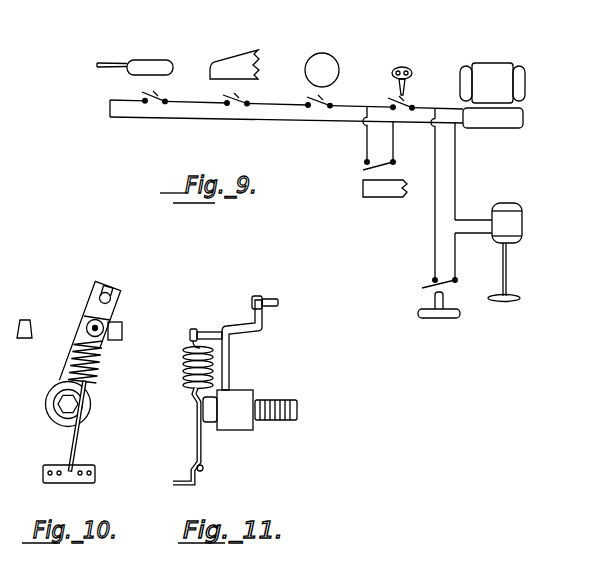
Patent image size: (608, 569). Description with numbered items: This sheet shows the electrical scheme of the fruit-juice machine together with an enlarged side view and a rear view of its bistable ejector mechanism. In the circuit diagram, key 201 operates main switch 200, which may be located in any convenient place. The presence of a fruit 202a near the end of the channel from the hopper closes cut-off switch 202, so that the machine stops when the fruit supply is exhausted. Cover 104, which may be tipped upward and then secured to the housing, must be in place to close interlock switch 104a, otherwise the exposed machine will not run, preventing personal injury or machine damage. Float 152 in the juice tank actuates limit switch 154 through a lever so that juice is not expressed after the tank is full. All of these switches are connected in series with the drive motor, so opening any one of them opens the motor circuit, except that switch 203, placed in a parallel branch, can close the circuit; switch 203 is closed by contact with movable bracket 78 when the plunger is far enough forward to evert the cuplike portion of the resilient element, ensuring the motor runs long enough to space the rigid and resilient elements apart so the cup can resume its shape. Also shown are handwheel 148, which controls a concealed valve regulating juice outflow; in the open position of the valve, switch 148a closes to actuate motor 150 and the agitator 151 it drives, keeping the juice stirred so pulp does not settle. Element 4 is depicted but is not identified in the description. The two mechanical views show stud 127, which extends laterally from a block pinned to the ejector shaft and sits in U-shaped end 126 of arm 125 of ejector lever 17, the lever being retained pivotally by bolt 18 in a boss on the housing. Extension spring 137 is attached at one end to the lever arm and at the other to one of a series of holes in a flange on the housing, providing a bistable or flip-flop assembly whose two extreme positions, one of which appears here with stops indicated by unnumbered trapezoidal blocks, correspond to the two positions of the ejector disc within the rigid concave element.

In FIG. 9, the float 152 is at (147, 59).
In FIG. 9, the cover 104 is at (237, 59).
In FIG. 9, the fruit 202a is at (322, 53).
In FIG. 9, the key 201 is at (402, 67).
In FIG. 9, the motor 4 is at (499, 63).
In FIG. 9, the limit switch 154 is at (170, 92).
In FIG. 9, the interlock switch 104a is at (256, 95).
In FIG. 9, the cut-off switch 202 is at (334, 96).
In FIG. 9, the main switch 200 is at (418, 98).
In FIG. 9, the switch 203 is at (365, 159).
In FIG. 9, the movable bracket 78 is at (385, 197).
In FIG. 9, the motor 150 is at (523, 220).
In FIG. 9, the switch 148a is at (424, 283).
In FIG. 9, the handwheel 148 is at (440, 318).
In FIG. 9, the agitator 151 is at (521, 298).
In FIG. 10, the U-shaped end 126 is at (99, 281).
In FIG. 10, the stud 127 is at (113, 290).
In FIG. 11, the stud 127 is at (281, 303).
In FIG. 10, the arm 125 is at (84, 320).
In FIG. 11, the arm 125 is at (246, 333).
In FIG. 10, the extension spring 137 is at (104, 364).
In FIG. 11, the extension spring 137 is at (184, 367).
In FIG. 10, the ejector lever 17 is at (44, 408).
In FIG. 11, the ejector lever 17 is at (248, 430).
In FIG. 11, the bolt 18 is at (210, 423).